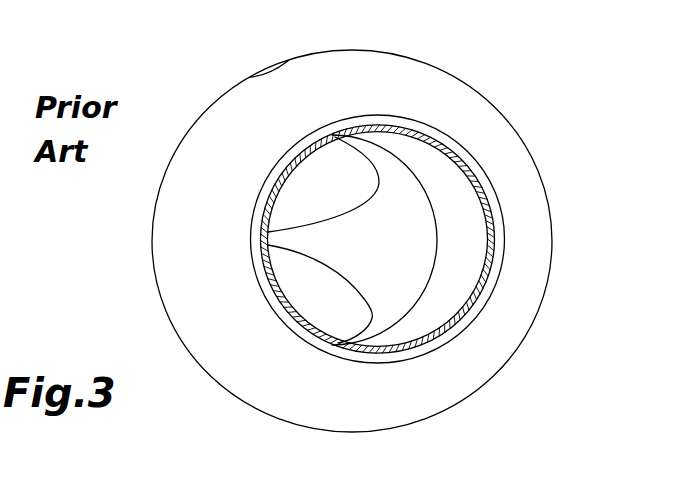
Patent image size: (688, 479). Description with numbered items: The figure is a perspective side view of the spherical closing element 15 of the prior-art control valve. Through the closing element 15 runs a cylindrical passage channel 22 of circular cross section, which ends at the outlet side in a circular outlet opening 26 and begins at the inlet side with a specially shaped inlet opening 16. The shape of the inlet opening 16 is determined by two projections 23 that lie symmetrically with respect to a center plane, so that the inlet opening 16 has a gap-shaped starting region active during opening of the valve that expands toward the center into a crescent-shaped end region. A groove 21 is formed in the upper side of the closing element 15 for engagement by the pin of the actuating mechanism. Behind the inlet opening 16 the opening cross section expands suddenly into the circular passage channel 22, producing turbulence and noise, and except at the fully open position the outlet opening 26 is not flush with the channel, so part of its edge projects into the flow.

The closing element 15 is at (430, 85).
The groove 21 is at (265, 69).
The passage channel 22 is at (463, 210).
The projections 23 is at (343, 185).
The outlet opening 26 is at (490, 287).
The inlet opening 16 is at (393, 290).